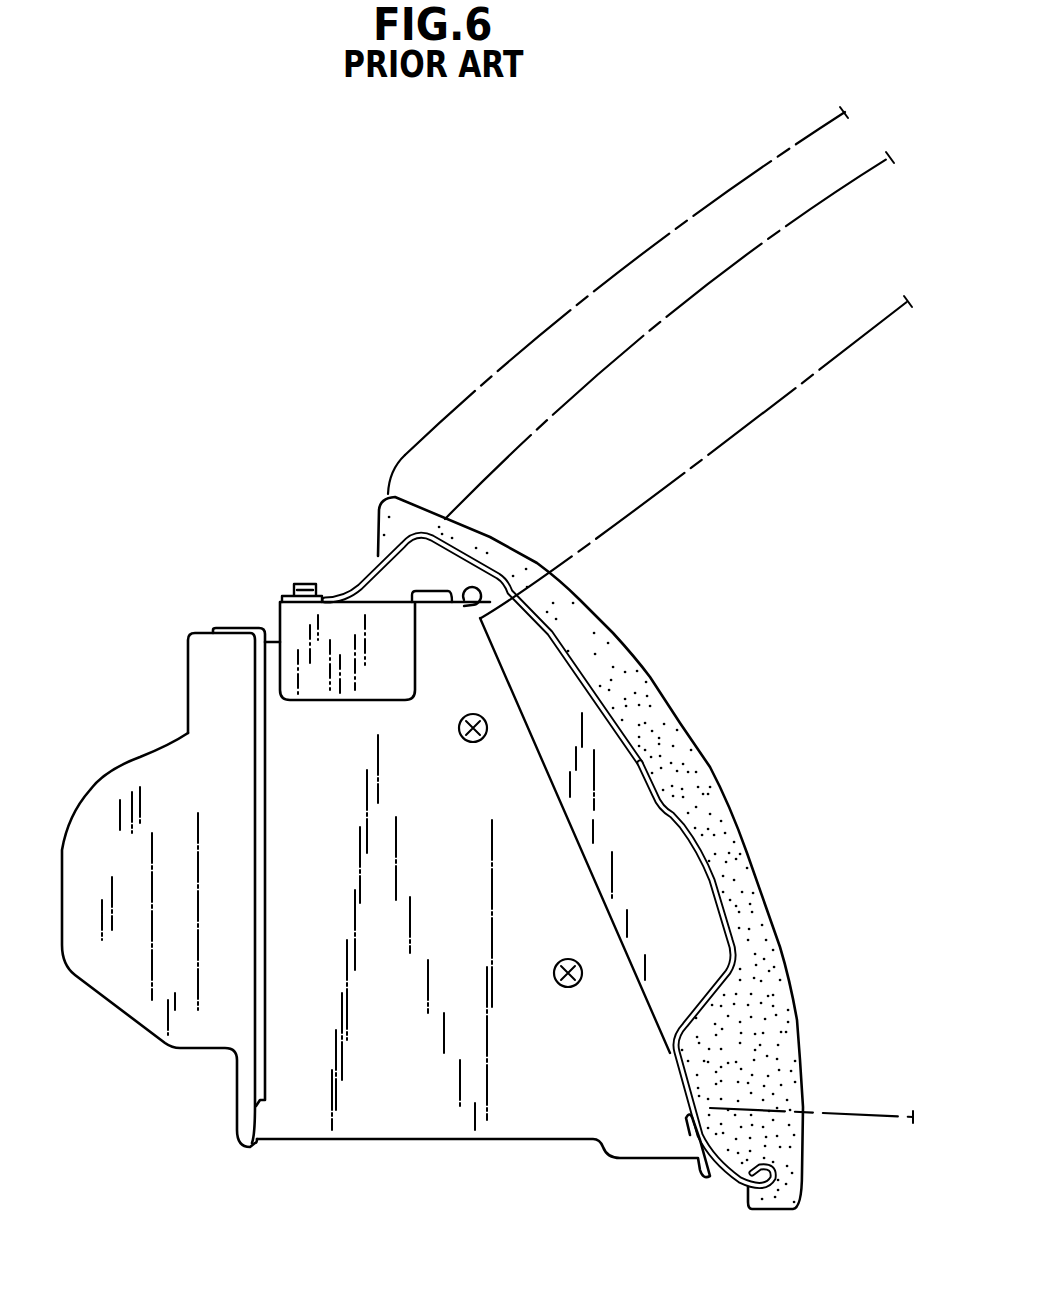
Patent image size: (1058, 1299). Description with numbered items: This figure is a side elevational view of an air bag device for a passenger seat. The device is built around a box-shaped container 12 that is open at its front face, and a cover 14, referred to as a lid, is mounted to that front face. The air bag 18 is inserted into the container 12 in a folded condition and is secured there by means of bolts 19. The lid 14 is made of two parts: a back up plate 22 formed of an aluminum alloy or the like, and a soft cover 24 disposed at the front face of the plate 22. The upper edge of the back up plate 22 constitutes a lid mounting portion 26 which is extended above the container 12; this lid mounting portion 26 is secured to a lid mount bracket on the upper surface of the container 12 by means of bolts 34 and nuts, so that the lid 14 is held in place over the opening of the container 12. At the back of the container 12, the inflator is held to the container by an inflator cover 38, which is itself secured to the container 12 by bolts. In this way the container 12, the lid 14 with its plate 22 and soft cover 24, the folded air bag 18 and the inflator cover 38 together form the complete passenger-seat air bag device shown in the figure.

The container 12 is at (425, 1120).
The cover 14 is at (636, 258).
The air bag 18 is at (753, 419).
The bolts 19 is at (437, 598).
The back up plate 22 is at (707, 880).
The soft cover 24 is at (787, 1150).
The lid mounting portion 26 is at (333, 600).
The bolts 34 is at (305, 580).
The inflator cover 38 is at (78, 978).